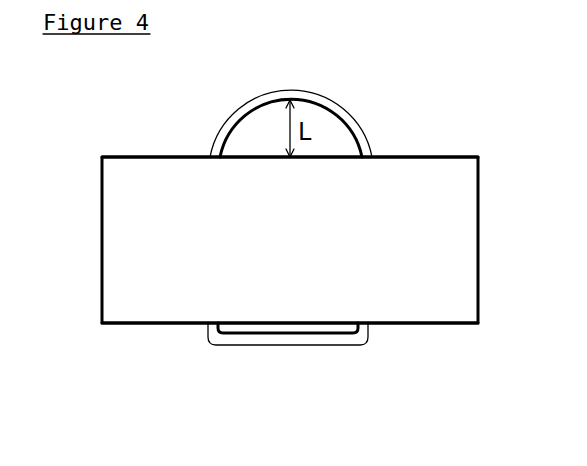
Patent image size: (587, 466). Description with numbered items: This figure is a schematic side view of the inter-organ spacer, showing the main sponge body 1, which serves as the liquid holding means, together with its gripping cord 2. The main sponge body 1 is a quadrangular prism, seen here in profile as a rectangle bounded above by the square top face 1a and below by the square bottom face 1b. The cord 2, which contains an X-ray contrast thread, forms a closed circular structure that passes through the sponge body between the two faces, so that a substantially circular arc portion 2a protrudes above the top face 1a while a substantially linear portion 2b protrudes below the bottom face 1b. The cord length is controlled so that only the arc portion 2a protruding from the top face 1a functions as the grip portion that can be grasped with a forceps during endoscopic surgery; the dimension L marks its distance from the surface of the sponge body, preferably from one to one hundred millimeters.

The main sponge body 1 is at (100, 253).
The top face 1a is at (162, 157).
The bottom face 1b is at (158, 324).
The gripping cord 2 is at (332, 278).
The substantially circular arc portion 2a is at (357, 123).
The substantially linear portion 2b is at (293, 372).